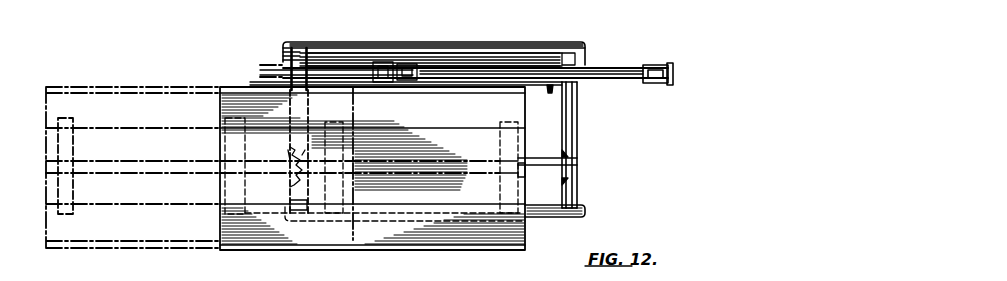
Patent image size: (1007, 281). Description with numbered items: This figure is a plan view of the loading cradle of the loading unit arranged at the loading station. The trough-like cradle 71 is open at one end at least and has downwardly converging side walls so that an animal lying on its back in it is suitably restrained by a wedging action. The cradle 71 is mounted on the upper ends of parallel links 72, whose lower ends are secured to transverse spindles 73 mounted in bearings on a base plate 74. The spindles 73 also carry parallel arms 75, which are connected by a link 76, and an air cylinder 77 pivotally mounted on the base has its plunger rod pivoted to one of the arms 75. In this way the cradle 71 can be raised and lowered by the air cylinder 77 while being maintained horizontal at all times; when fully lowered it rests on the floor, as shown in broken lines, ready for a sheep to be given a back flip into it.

The trough-like cradle 71 is at (237, 88).
The parallel links 72 is at (290, 160).
The transverse spindles 73 is at (300, 56).
The base plate 74 is at (283, 45).
The parallel arms 75 is at (340, 72).
The link 76 is at (615, 75).
The air cylinder 77 is at (468, 60).